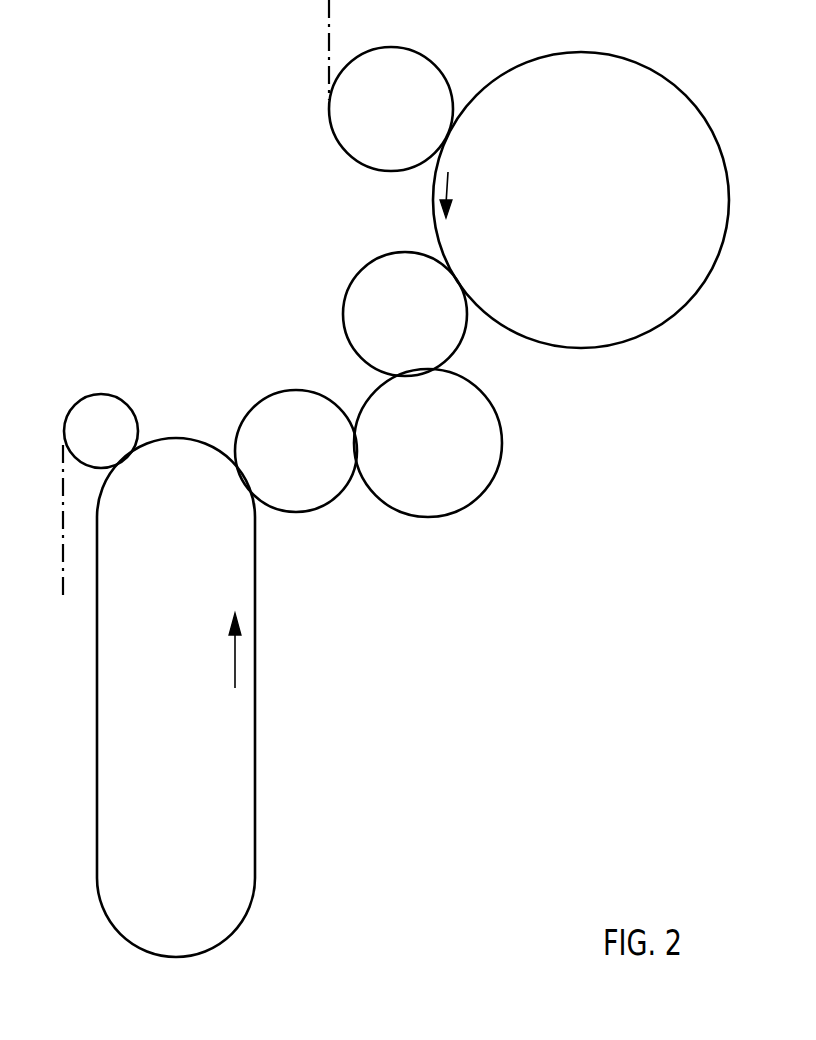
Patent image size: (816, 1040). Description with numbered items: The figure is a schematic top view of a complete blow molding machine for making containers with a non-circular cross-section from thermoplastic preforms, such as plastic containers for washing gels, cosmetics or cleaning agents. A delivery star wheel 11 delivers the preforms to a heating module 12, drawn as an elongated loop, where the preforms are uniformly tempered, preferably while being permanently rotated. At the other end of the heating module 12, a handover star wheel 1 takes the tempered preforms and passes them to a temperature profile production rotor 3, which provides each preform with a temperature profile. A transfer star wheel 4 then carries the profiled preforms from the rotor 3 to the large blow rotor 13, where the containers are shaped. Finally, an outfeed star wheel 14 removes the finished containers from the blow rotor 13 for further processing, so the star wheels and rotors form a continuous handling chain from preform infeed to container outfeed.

The handover star wheel 1 is at (259, 400).
The temperature profile production rotor 3 is at (420, 517).
The transfer star wheel 4 is at (457, 344).
The delivery star wheel 11 is at (121, 395).
The heating module 12 is at (256, 785).
The blow rotor 13 is at (584, 310).
The outfeed star wheel 14 is at (360, 150).